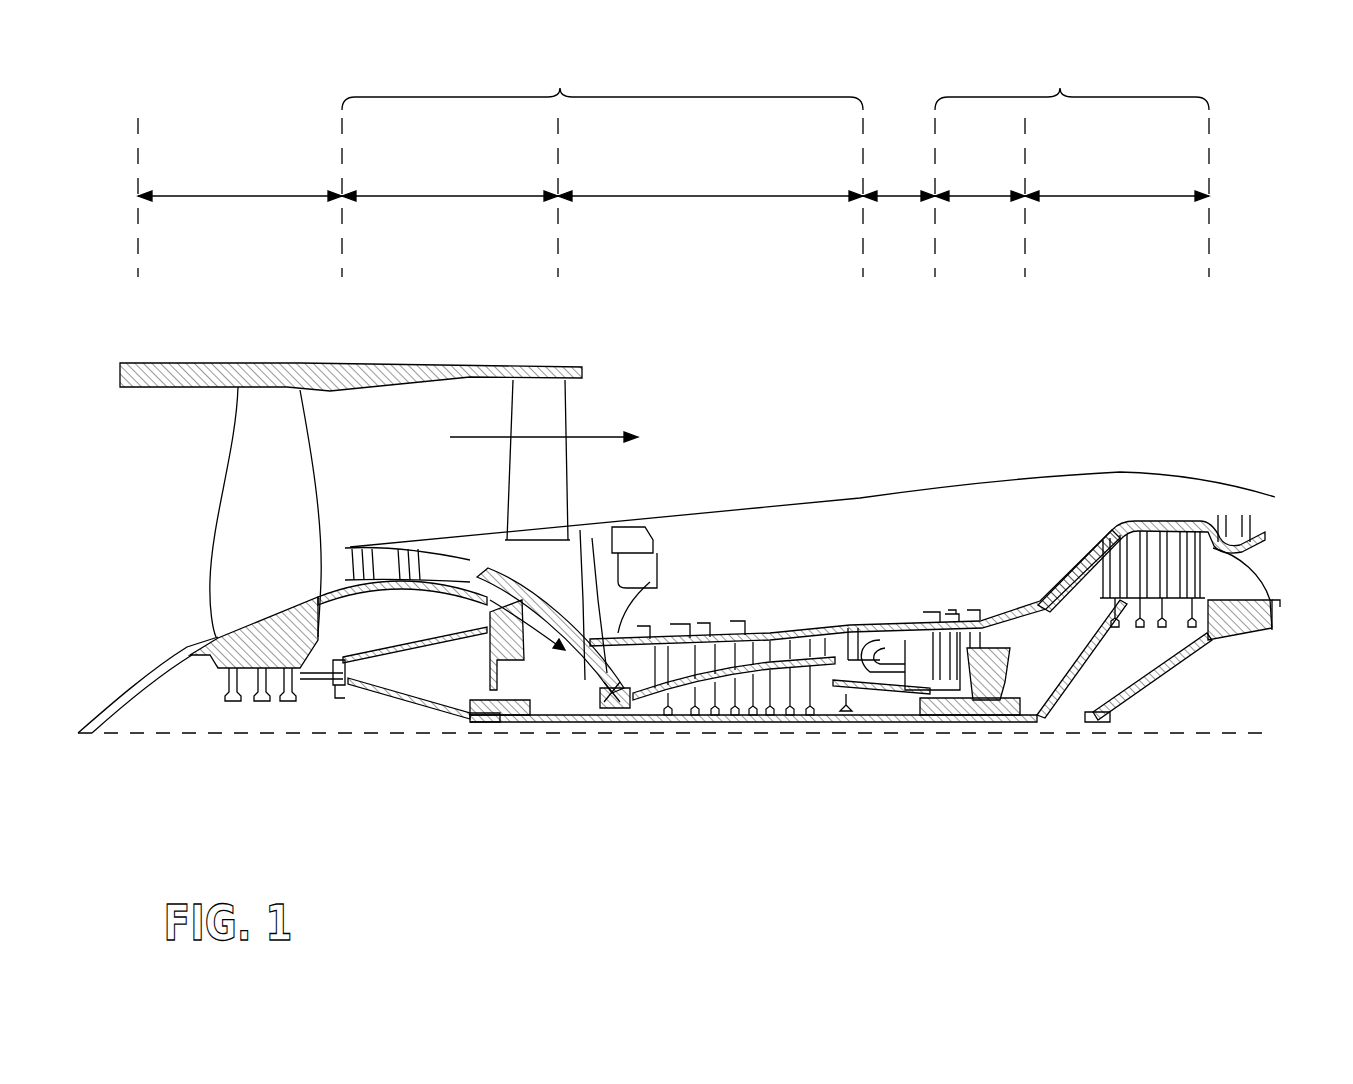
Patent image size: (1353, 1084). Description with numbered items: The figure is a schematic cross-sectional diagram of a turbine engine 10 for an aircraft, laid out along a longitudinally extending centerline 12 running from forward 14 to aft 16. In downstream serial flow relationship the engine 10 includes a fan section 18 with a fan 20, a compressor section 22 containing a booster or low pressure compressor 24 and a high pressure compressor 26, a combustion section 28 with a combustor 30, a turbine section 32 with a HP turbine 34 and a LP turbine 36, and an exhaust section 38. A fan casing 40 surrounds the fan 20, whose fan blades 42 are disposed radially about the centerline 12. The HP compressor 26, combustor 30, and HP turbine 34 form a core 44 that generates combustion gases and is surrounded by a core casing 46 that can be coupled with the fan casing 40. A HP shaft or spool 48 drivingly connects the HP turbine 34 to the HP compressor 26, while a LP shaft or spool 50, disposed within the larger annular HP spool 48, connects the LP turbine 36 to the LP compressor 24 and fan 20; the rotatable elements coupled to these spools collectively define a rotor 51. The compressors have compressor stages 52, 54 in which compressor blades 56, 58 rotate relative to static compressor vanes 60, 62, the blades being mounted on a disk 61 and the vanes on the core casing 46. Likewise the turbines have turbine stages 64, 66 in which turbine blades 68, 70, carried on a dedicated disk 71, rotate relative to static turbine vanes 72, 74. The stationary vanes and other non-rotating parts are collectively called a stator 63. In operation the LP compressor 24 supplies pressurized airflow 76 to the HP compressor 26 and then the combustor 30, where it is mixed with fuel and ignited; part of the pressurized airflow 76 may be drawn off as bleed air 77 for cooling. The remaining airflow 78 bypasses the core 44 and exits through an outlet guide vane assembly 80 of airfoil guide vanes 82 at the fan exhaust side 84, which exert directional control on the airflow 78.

The turbine engine 10 is at (893, 352).
The centerline 12 is at (238, 737).
The forward 14 is at (90, 498).
The aft 16 is at (1300, 584).
The fan section 18 is at (240, 186).
The fan 20 is at (172, 576).
The compressor section 22 is at (602, 84).
The low pressure compressor 24 is at (450, 186).
The high pressure compressor 26 is at (710, 186).
The combustion section 28 is at (899, 180).
The combustor 30 is at (900, 630).
The turbine section 32 is at (1072, 84).
The HP turbine 34 is at (980, 185).
The LP turbine 36 is at (1117, 185).
The exhaust section 38 is at (1287, 537).
The fan casing 40 is at (383, 365).
The fan blades 42 is at (295, 445).
The core 44 is at (846, 536).
The core casing 46 is at (1077, 547).
The HP shaft or spool 48 is at (875, 692).
The LP shaft or spool 50 is at (488, 727).
The rotor 51 is at (747, 735).
The compressor stages 52 is at (402, 526).
The compressor stages 54 is at (693, 533).
The compressor blades 56 is at (395, 533).
The compressor blades 58 is at (635, 640).
The static compressor vanes 60 is at (355, 548).
The disk 61 is at (370, 590).
The static compressor vanes 62 is at (640, 610).
The stator 63 is at (615, 700).
The turbine stages 64 is at (1000, 562).
The turbine stages 66 is at (1193, 418).
The turbine blades 68 is at (965, 625).
The turbine blades 70 is at (1192, 535).
The disk 71 is at (945, 655).
The static turbine vanes 72 is at (948, 625).
The static turbine vanes 74 is at (1178, 540).
The pressurized airflow 76 is at (580, 610).
The bleed air 77 is at (742, 622).
The airflow 78 is at (452, 433).
The outlet guide vane assembly 80 is at (588, 489).
The airfoil guide vanes 82 is at (520, 475).
The fan exhaust side 84 is at (612, 395).